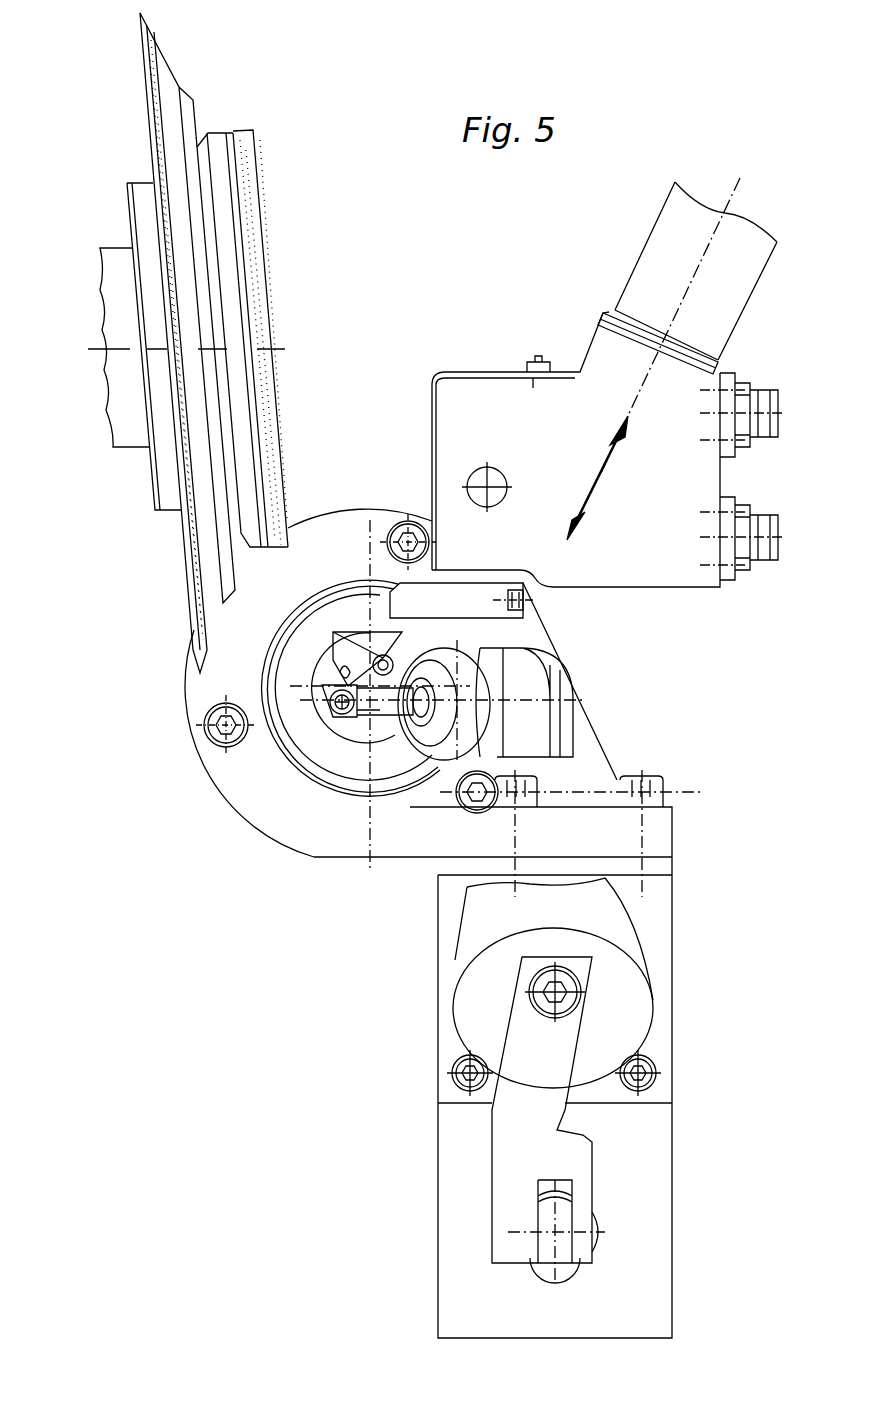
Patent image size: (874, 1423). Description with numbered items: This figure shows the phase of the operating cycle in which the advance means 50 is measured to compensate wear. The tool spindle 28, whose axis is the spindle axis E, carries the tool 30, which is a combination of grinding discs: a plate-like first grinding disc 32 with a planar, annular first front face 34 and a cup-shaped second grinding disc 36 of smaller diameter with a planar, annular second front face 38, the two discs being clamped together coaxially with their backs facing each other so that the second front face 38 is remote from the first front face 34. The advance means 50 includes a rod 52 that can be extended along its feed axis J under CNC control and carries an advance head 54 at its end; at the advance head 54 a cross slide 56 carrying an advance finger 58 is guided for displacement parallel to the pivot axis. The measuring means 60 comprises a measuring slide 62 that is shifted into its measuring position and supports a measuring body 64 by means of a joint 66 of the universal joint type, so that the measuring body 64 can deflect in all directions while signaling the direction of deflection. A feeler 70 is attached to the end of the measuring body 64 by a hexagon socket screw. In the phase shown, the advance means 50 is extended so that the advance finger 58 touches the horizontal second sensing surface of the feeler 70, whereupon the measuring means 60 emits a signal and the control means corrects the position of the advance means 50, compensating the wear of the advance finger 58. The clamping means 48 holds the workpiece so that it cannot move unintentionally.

The tool spindle 28 is at (128, 413).
The tool 30 is at (316, 293).
The first grinding disc 32 is at (165, 107).
The first front face 34 is at (147, 110).
The second grinding disc 36 is at (222, 180).
The second front face 38 is at (268, 242).
The clamping means 48 is at (417, 1077).
The advance means 50 is at (580, 265).
The rod 52 is at (655, 253).
The advance head 54 is at (497, 393).
The cross slide 56 is at (474, 626).
The advance finger 58 is at (348, 683).
The measuring means 60 is at (597, 681).
The measuring slide 62 is at (498, 707).
The measuring body 64 is at (375, 720).
The joint 66 is at (445, 712).
The feeler 70 is at (340, 718).
The spindle axis E is at (98, 350).
The axis J is at (742, 188).